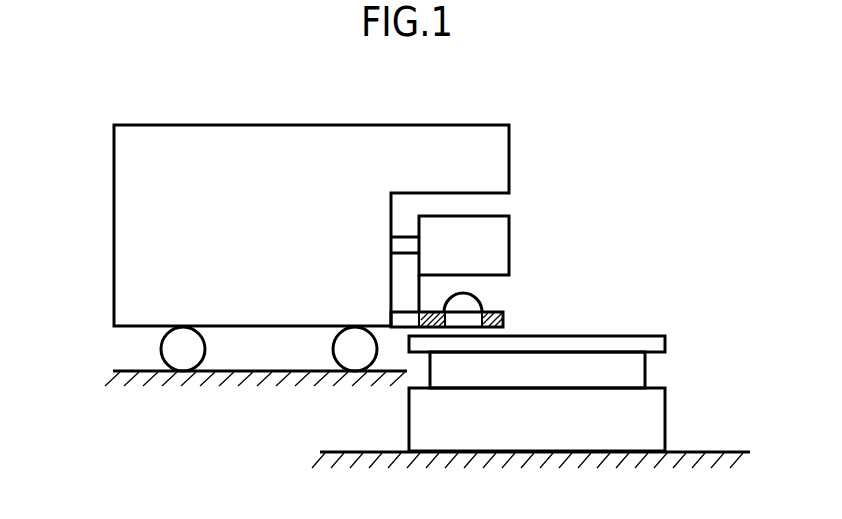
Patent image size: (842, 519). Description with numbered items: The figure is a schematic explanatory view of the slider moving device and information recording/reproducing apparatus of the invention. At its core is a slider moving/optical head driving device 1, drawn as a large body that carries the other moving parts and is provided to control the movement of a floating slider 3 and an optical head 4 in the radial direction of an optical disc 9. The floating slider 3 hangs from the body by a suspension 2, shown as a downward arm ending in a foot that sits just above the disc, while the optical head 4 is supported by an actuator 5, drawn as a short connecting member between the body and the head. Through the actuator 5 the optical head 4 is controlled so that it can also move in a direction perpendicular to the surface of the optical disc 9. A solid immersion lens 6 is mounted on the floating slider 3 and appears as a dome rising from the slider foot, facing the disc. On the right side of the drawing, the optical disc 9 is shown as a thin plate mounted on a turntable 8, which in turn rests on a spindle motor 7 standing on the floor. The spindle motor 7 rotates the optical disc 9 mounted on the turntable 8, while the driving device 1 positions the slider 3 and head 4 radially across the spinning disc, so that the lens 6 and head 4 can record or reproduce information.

The slider moving/optical head driving device 1 is at (114, 197).
The suspension 2 is at (405, 312).
The floating slider 3 is at (503, 321).
The optical head 4 is at (509, 225).
The actuator 5 is at (404, 237).
The solid immersion lens 6 is at (482, 300).
The spindle motor 7 is at (648, 416).
The turntable 8 is at (645, 369).
The optical disc 9 is at (626, 336).